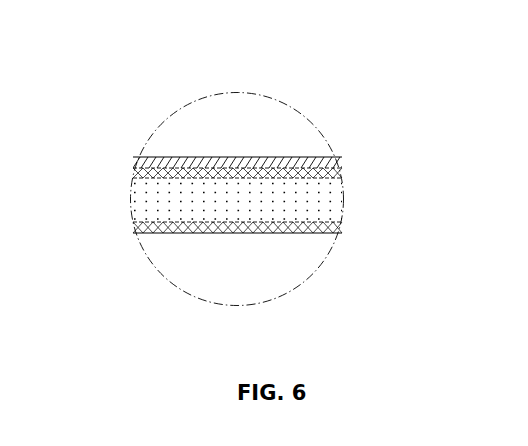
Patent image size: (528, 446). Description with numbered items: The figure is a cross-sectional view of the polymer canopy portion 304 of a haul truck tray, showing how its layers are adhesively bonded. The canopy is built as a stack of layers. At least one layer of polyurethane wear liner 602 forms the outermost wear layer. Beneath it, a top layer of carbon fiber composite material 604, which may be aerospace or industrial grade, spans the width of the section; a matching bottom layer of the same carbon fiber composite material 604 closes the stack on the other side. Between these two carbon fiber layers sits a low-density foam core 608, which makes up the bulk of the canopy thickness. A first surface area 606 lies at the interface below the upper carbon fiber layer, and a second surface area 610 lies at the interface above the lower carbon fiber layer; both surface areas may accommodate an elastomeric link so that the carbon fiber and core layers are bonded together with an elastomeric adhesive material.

The polymer canopy portion 304 is at (278, 322).
The polyurethane wear liner 602 is at (277, 165).
The carbon fiber composite material 604 is at (303, 175).
The first surface area 606 is at (170, 177).
The low-density foam core 608 is at (328, 221).
The second surface area 610 is at (150, 220).